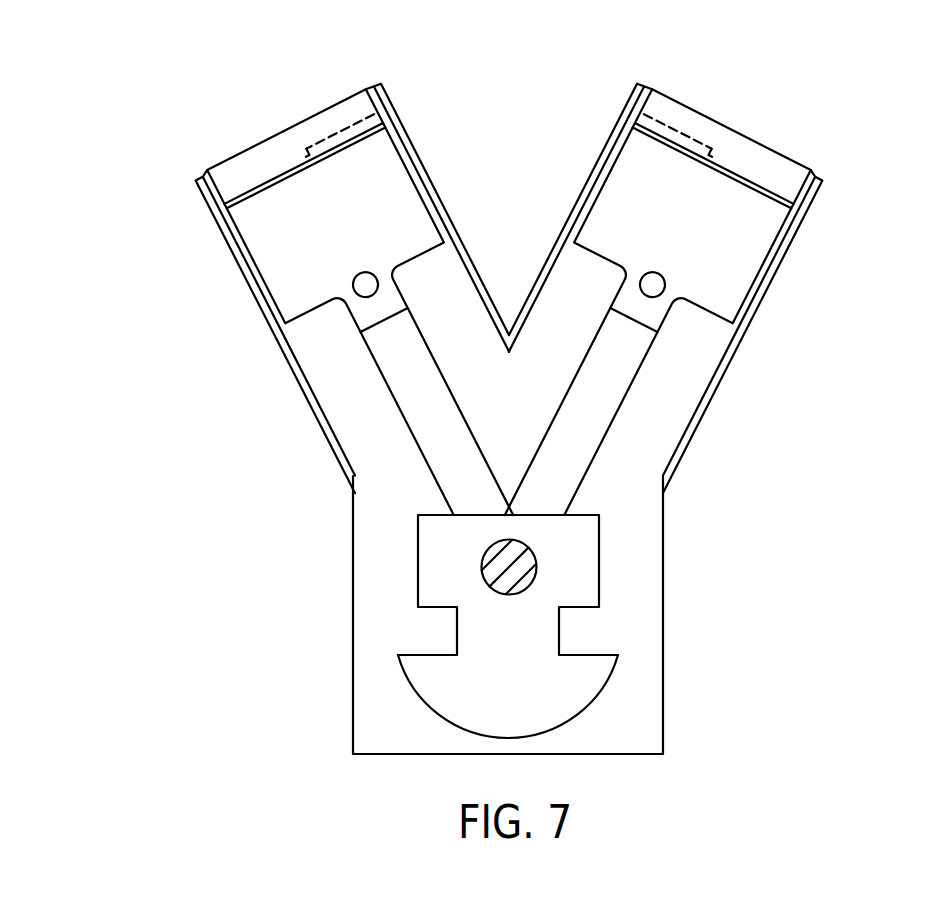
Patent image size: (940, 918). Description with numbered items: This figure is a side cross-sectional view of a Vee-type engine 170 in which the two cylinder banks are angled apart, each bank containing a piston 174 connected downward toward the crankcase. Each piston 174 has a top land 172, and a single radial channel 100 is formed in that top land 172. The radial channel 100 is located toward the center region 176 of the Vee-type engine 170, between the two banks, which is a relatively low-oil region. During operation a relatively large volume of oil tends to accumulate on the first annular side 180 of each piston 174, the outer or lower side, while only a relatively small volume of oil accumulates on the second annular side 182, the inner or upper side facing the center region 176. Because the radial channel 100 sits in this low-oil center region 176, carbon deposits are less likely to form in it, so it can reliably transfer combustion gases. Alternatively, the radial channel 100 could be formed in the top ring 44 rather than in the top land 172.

The top ring 44 is at (793, 213).
The radial channel 100 is at (676, 131).
The Vee-type engine 170 is at (837, 90).
The top land 172 is at (790, 186).
The piston 174 is at (763, 270).
The center region 176 is at (556, 48).
The first annular side 180 is at (718, 397).
The second annular side 182 is at (571, 208).